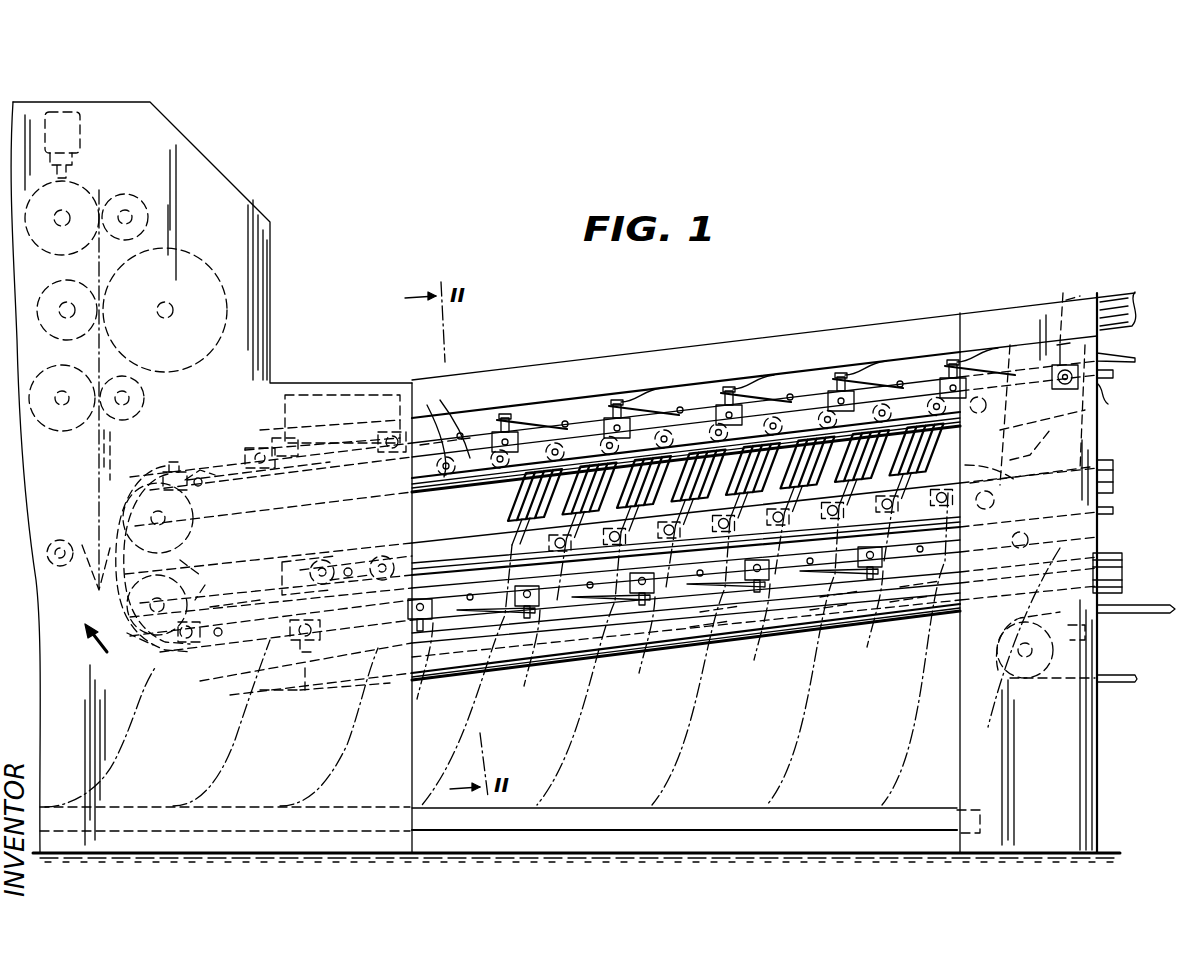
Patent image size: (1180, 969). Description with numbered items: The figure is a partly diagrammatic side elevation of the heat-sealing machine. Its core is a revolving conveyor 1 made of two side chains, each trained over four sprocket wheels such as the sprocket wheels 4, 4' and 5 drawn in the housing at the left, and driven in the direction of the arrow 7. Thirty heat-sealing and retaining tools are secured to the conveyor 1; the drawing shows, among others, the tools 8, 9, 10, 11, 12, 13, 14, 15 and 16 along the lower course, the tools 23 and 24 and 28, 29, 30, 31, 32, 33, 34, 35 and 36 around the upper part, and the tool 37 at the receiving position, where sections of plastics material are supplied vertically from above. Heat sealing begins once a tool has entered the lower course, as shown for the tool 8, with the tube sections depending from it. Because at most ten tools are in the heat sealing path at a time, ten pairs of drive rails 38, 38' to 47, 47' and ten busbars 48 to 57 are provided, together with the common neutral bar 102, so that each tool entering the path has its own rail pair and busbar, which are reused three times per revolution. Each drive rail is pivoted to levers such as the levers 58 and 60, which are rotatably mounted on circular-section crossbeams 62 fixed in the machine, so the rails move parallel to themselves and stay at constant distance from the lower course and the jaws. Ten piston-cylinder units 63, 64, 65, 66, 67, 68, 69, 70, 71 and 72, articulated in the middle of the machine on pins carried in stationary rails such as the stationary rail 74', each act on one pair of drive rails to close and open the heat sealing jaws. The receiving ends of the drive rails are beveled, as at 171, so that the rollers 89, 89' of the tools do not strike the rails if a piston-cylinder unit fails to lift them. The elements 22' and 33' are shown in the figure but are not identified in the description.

The revolving conveyor 1 is at (245, 460).
The sprocket wheel 4 is at (197, 557).
The sprocket wheel 4' is at (214, 572).
The sprocket wheel 5 is at (98, 495).
The arrow 7 is at (85, 632).
The heat-sealing and retaining tool 8 is at (192, 660).
The heat-sealing and retaining tool 9 is at (300, 668).
The heat-sealing and retaining tool 10 is at (430, 672).
The heat-sealing and retaining tool 11 is at (525, 668).
The heat-sealing and retaining tool 12 is at (640, 650).
The heat-sealing and retaining tool 13 is at (762, 592).
The heat-sealing and retaining tool 14 is at (880, 578).
The heat-sealing and retaining tool 15 is at (1025, 575).
The heat-sealing and retaining tool 16 is at (1122, 574).
The bracket 22' is at (1121, 406).
The heat-sealing and retaining tool 23 is at (540, 458).
The heat-sealing and retaining tool 24 is at (445, 431).
The stationary rail 74' is at (468, 421).
The heat-sealing and retaining tool 28 is at (1066, 300).
The heat-sealing and retaining tool 29 is at (940, 384).
The heat-sealing and retaining tool 30 is at (830, 392).
The heat-sealing and retaining tool 31 is at (717, 406).
The heat-sealing and retaining tool 32 is at (605, 420).
The heat-sealing and retaining tool 33 is at (488, 433).
The sprocket 33' is at (211, 496).
The heat-sealing and retaining tool 34 is at (385, 432).
The heat-sealing and retaining tool 35 is at (275, 440).
The heat-sealing and retaining tool 36 is at (168, 466).
The heat-sealing and retaining tool 37 is at (90, 582).
The drive rail 38 is at (840, 629).
The drive rail 38' is at (854, 635).
The drive rail 47 is at (916, 624).
The drive rail 47' is at (926, 631).
The busbar 48 is at (317, 709).
The busbar 57 is at (303, 701).
The neutral bar 102 is at (311, 712).
The lever 58 is at (347, 566).
The lever 60 is at (422, 556).
The crossbeam 62 is at (320, 562).
The piston-cylinder unit 63 is at (512, 502).
The piston-cylinder unit 64 is at (560, 418).
The piston-cylinder unit 65 is at (636, 398).
The piston-cylinder unit 66 is at (670, 405).
The piston-cylinder unit 67 is at (748, 386).
The piston-cylinder unit 68 is at (782, 392).
The piston-cylinder unit 69 is at (862, 372).
The piston-cylinder unit 70 is at (895, 377).
The piston-cylinder unit 71 is at (990, 480).
The piston-cylinder unit 72 is at (1025, 455).
The roller 89 is at (725, 641).
The roller 89' is at (737, 649).
The bevel 171 is at (225, 618).